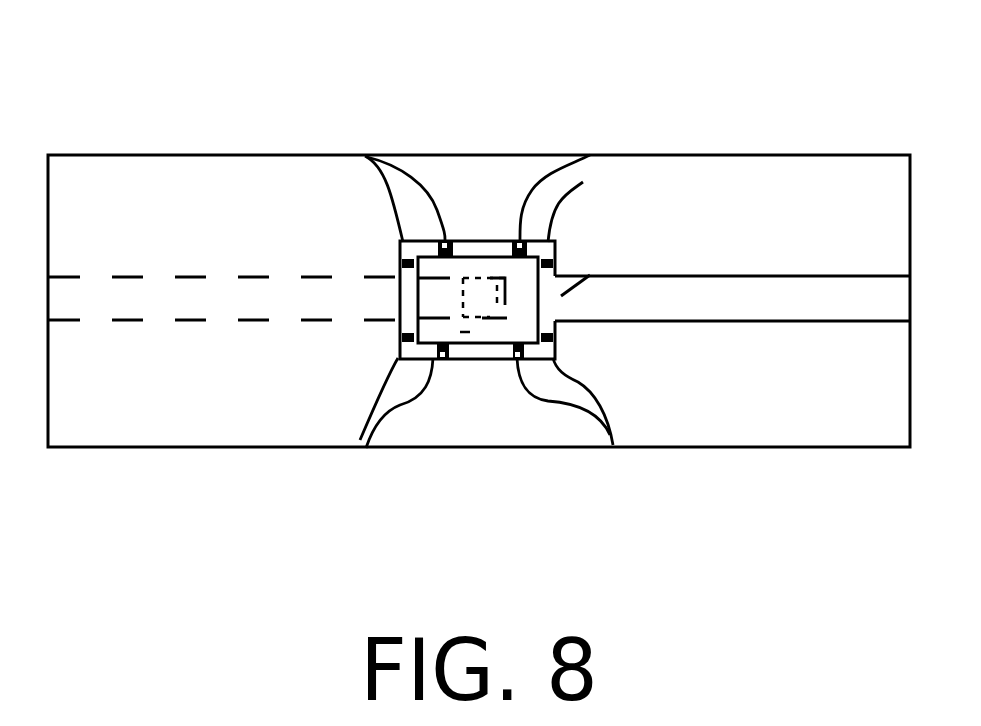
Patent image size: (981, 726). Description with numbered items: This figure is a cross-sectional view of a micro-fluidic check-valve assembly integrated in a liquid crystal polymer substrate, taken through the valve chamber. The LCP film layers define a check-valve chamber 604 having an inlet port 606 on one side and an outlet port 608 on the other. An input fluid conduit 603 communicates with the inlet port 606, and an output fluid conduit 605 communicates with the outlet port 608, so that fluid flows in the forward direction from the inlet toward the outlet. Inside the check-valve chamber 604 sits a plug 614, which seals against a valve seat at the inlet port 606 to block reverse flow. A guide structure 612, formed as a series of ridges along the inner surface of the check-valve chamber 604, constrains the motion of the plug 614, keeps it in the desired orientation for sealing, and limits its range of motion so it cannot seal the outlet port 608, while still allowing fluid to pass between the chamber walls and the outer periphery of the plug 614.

The input fluid conduit 603 is at (279, 307).
The check-valve chamber 604 is at (472, 242).
The output fluid conduit 605 is at (797, 293).
The inlet port 606 is at (488, 298).
The outlet port 608 is at (565, 291).
The guide structure 612 is at (365, 156).
The plug 614 is at (465, 332).